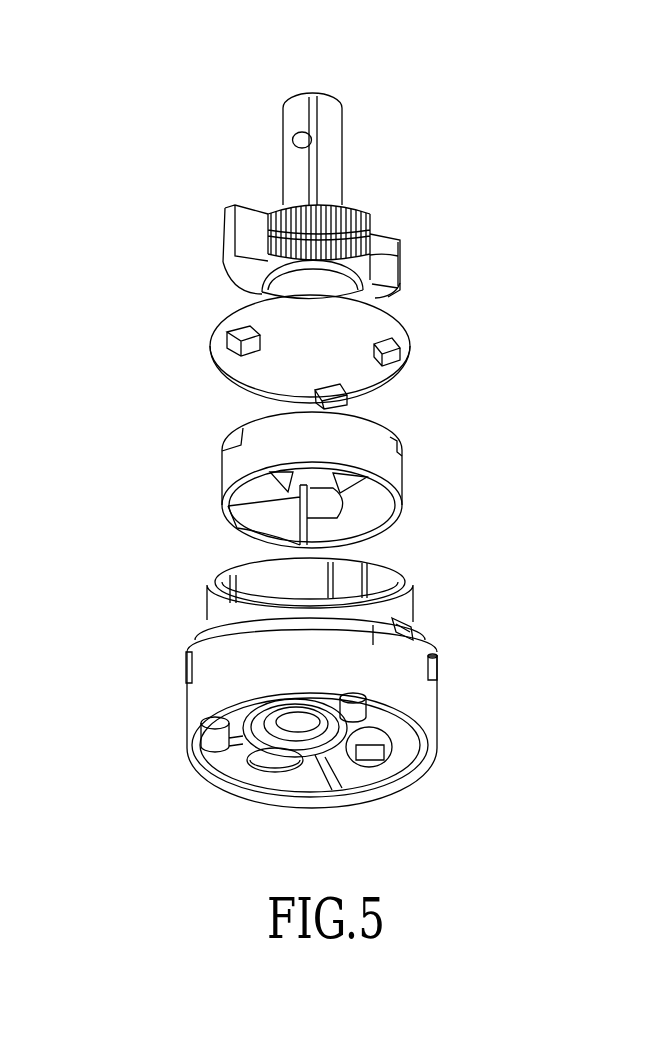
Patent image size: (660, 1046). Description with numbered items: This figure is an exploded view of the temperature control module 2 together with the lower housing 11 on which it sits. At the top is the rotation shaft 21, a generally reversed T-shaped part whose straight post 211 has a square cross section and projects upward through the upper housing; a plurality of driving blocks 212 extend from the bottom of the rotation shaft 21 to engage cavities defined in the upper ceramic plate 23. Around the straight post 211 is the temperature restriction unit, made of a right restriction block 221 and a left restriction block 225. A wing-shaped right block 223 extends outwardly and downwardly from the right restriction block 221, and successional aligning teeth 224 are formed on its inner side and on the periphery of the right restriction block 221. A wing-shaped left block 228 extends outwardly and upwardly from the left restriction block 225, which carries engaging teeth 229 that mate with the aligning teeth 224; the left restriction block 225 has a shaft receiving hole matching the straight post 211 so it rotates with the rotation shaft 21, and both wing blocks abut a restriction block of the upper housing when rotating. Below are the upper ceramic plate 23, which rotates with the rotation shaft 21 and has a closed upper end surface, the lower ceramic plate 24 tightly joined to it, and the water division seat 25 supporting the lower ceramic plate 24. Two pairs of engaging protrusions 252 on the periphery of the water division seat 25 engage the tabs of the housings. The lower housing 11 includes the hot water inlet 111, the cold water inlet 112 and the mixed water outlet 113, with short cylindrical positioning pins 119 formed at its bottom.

The temperature control module 2 is at (522, 430).
The lower housing 11 is at (330, 720).
The hot water inlet 111 is at (270, 767).
The cold water inlet 112 is at (365, 752).
The mixed water outlet 113 is at (212, 724).
The positioning pins 119 is at (203, 755).
The rotation shaft 21 is at (356, 338).
The straight post 211 is at (337, 137).
The driving blocks 212 is at (233, 338).
The right restriction block 221 is at (314, 222).
The right block 223 is at (245, 216).
The aligning teeth 224 is at (350, 220).
The left restriction block 225 is at (394, 231).
The left block 228 is at (387, 284).
The engaging teeth 229 is at (372, 255).
The upper ceramic plate 23 is at (221, 470).
The lower ceramic plate 24 is at (346, 591).
The water division seat 25 is at (428, 643).
The engaging protrusions 252 is at (415, 625).